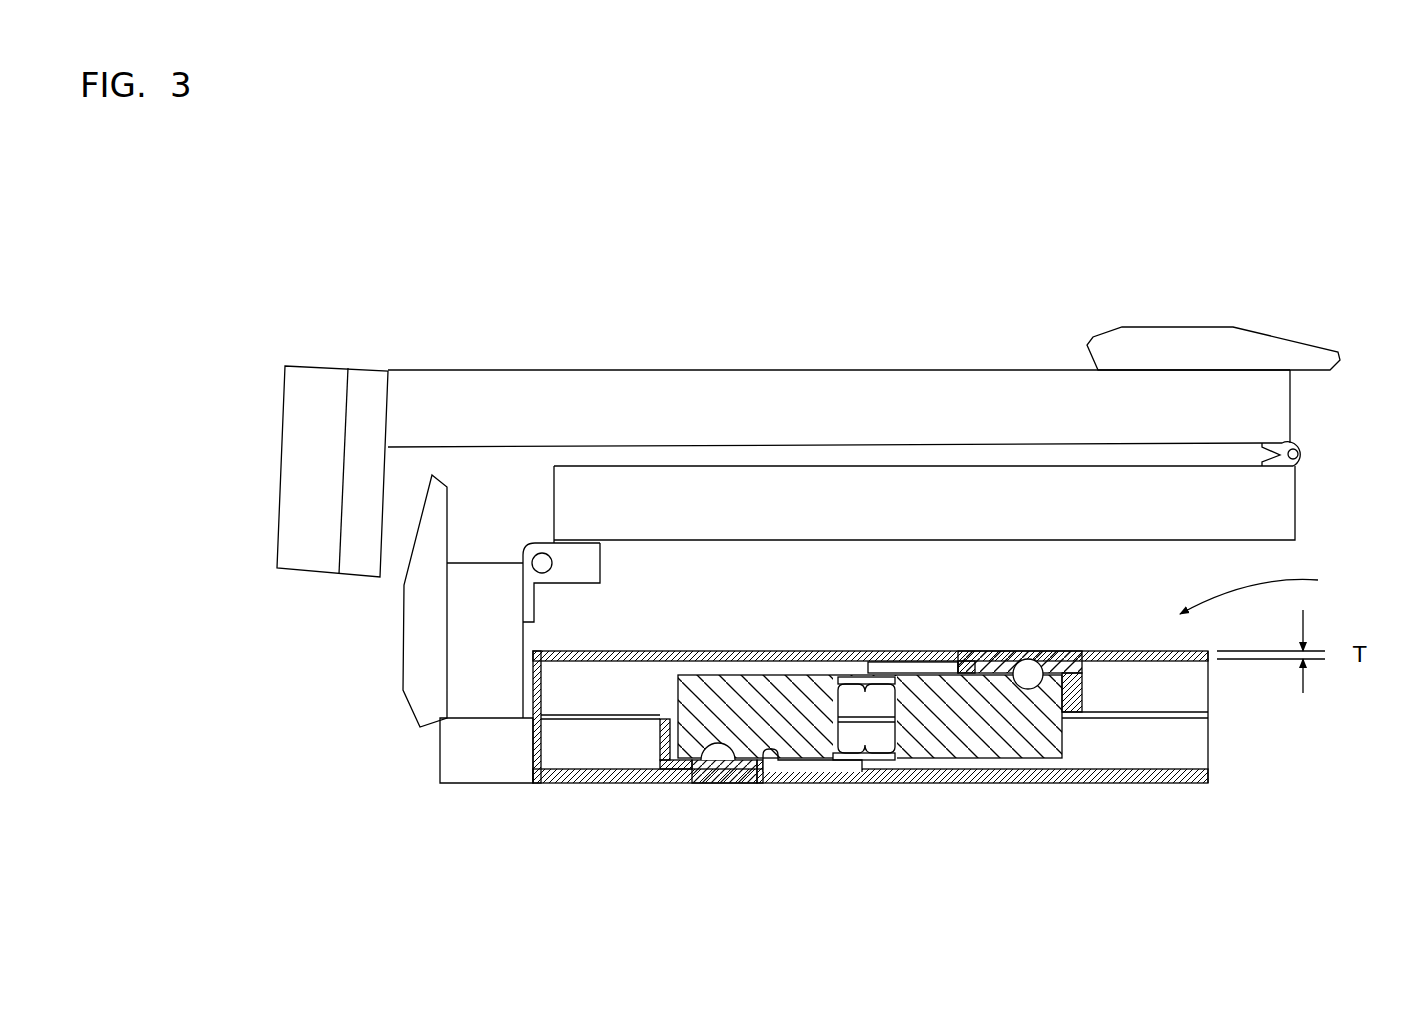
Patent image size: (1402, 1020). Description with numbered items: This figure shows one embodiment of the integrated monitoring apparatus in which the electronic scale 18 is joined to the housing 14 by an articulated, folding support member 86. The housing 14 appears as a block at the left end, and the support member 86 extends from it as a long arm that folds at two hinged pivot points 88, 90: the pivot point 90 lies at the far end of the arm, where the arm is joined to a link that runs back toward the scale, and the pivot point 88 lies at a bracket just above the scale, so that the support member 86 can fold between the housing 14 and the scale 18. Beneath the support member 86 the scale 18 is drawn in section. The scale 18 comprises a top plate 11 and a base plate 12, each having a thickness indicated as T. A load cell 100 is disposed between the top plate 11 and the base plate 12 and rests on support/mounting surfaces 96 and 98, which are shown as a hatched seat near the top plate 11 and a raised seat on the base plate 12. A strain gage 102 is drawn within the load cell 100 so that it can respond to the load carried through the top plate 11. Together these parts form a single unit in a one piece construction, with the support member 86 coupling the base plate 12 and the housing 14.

The top plate 11 is at (828, 652).
The base plate 12 is at (1208, 730).
The housing 14 is at (305, 367).
The electronic scale 18 is at (1265, 588).
The support member 86 is at (722, 370).
The hinged pivot point 88 is at (546, 573).
The hinged pivot point 90 is at (1302, 450).
The support/mounting surface 96 is at (1018, 662).
The support/mounting surface 98 is at (736, 752).
The load cell 100 is at (725, 706).
The strain gage 102 is at (868, 673).